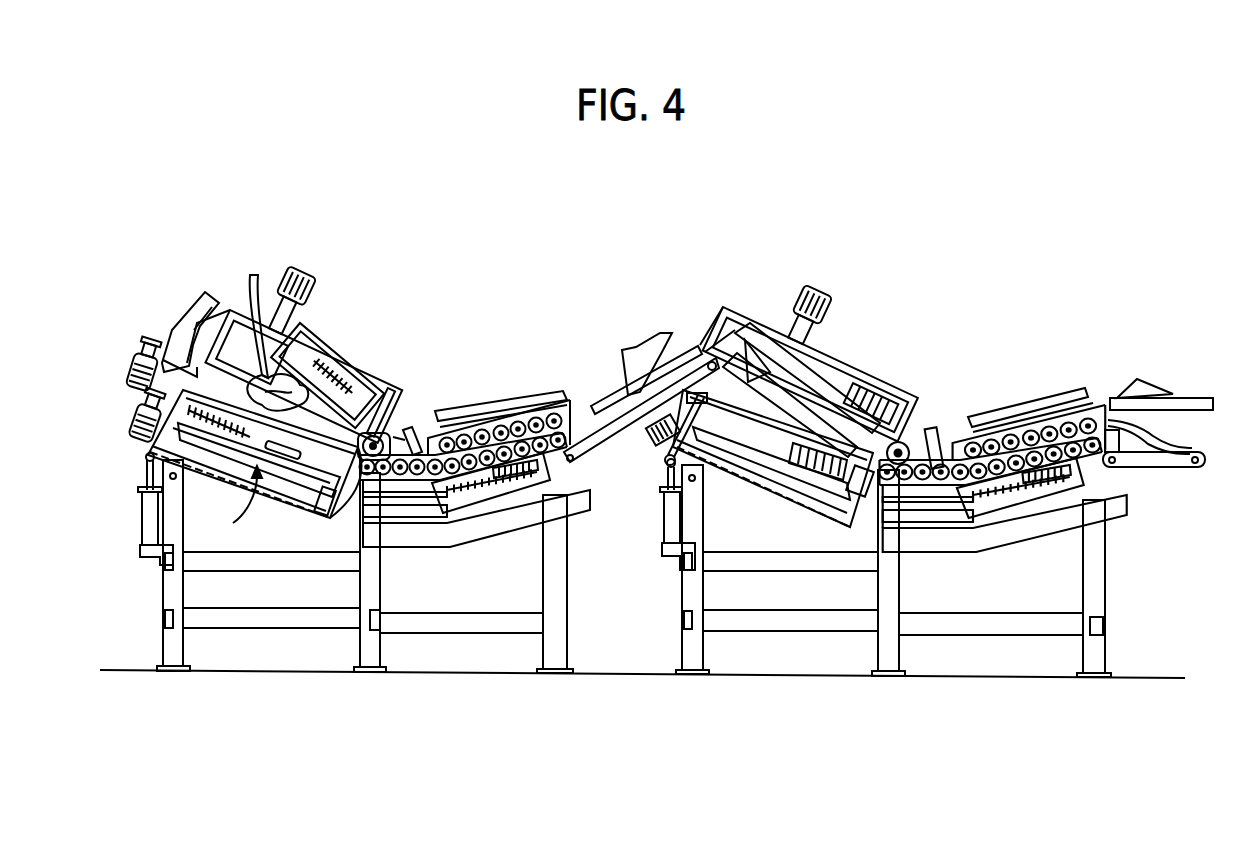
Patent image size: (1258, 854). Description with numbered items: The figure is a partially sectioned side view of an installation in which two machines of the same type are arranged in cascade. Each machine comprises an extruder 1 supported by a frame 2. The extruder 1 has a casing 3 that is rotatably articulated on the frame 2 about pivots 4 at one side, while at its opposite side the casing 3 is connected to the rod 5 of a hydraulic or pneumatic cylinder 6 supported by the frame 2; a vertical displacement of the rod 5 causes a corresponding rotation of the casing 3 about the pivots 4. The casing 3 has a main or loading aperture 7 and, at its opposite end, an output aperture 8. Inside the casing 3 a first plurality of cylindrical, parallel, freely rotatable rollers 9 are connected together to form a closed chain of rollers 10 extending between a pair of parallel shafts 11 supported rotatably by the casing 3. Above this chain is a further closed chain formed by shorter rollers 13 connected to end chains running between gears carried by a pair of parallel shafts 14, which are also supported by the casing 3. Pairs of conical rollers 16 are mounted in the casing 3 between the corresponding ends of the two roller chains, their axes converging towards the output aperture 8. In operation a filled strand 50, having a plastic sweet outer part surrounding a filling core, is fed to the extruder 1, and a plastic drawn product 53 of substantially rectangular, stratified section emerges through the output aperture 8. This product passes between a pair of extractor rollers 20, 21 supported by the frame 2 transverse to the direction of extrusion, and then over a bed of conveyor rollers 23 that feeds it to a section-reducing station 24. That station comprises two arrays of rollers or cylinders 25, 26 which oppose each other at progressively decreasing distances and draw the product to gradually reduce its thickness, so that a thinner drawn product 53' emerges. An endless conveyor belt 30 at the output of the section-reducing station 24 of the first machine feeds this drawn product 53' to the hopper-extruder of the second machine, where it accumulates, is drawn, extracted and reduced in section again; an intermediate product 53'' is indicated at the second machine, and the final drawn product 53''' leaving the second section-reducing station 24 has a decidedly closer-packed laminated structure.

The extruder 1 is at (383, 270).
The frame 2 is at (187, 587).
The casing 3 is at (343, 334).
The pivots 4 is at (358, 487).
The rod 5 is at (140, 473).
The hydraulic or pneumatic cylinder 6 is at (145, 522).
The main or loading aperture 7 is at (273, 327).
The output aperture 8 is at (375, 430).
The rollers 9 is at (243, 415).
The chain of rollers 10 is at (234, 507).
The parallel shafts 11 is at (312, 485).
The rollers 13 is at (355, 378).
The parallel shafts 14 is at (313, 320).
The conical rollers 16 is at (233, 340).
The extractor roller 20 is at (371, 476).
The extractor roller 21 is at (912, 442).
The bed of conveyor rollers 23 is at (435, 476).
The section-reducing station 24 is at (523, 378).
The rollers or cylinders 25 is at (520, 427).
The rollers or cylinders 26 is at (553, 440).
The endless conveyor belt 30 is at (608, 380).
The filled strand 50 is at (248, 282).
The drawn product 53 is at (439, 378).
The drawn product 53' is at (638, 399).
The link arm 53'' is at (969, 420).
The final drawn product 53''' is at (1171, 414).